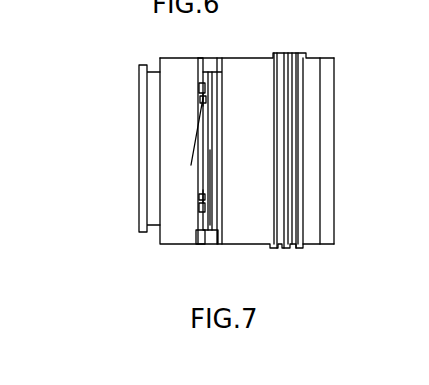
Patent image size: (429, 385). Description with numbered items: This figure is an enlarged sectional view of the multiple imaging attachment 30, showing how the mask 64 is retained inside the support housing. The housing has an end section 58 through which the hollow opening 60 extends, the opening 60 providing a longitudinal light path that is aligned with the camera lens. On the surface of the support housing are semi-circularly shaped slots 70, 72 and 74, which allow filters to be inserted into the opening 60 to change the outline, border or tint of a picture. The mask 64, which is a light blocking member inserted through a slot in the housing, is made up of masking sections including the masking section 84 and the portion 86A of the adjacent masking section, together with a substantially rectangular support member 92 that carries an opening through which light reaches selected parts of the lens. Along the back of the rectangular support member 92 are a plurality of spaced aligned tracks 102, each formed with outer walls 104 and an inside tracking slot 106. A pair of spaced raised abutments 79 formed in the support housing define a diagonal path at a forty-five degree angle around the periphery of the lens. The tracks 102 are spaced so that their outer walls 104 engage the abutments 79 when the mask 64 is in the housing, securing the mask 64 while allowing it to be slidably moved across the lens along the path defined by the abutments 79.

The multiple imaging attachment 30 is at (313, 250).
The end section 58 is at (152, 226).
The hollow opening 60 is at (334, 113).
The mask 64 is at (225, 66).
The semi-circularly shaped slot 70 is at (277, 53).
The semi-circularly shaped slot 72 is at (288, 53).
The semi-circularly shaped slot 74 is at (297, 53).
The raised abutments 79 is at (199, 88).
The masking section 84 is at (213, 192).
The portion of masking section 86A is at (213, 108).
The rectangular support member 92 is at (209, 98).
The tracks 102 is at (200, 99).
The outer walls 104 is at (204, 80).
The inside tracking slots 106 is at (199, 197).